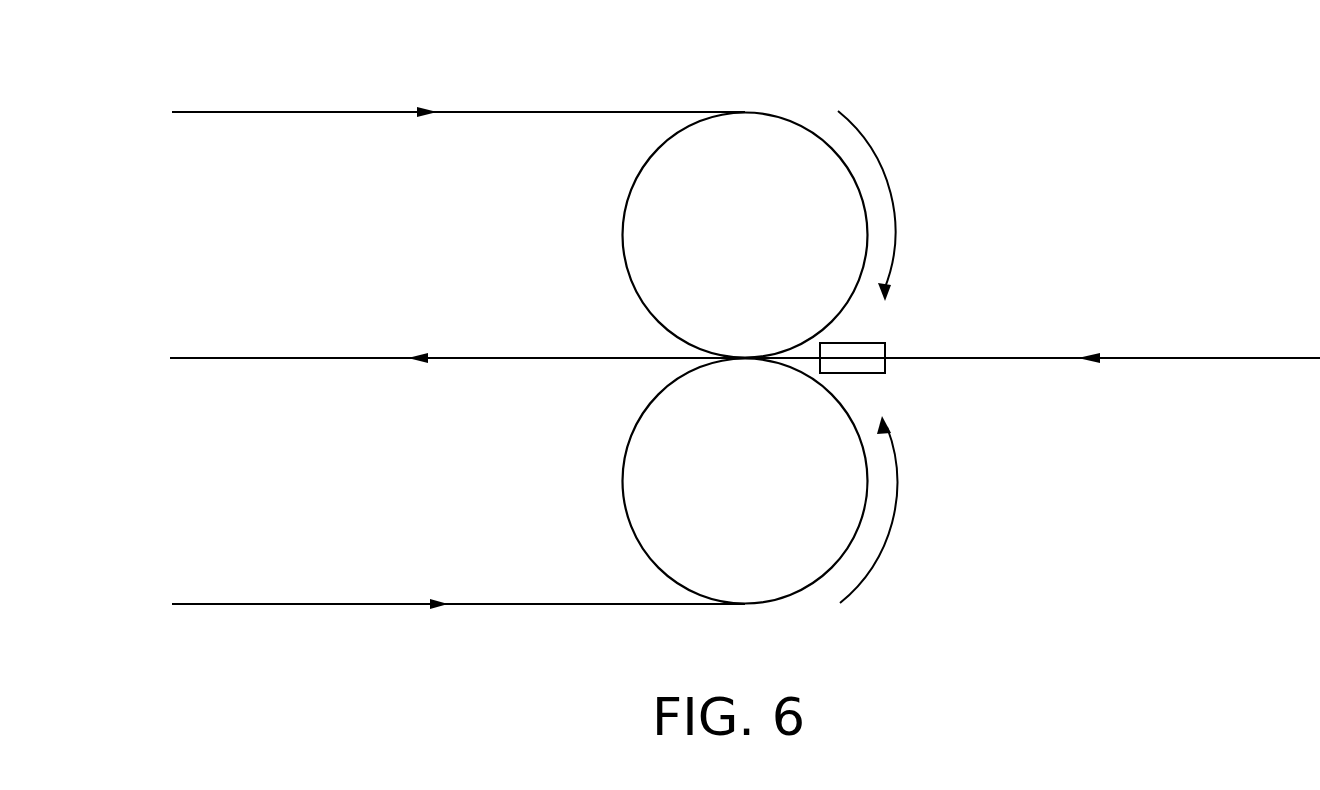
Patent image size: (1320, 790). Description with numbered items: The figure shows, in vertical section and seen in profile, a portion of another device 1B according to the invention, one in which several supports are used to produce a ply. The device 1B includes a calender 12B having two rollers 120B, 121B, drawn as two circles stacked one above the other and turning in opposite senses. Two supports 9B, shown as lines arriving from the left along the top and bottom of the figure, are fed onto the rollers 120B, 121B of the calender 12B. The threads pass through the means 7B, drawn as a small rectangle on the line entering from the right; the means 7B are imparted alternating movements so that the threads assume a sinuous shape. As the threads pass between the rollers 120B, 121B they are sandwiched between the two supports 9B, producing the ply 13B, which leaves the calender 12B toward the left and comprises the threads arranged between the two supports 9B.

The device 1B is at (605, 90).
The means 7B is at (885, 344).
The supports 9B is at (507, 112).
The calender 12B is at (778, 113).
The ply 13B is at (535, 358).
The roller 120B is at (627, 208).
The roller 121B is at (622, 490).